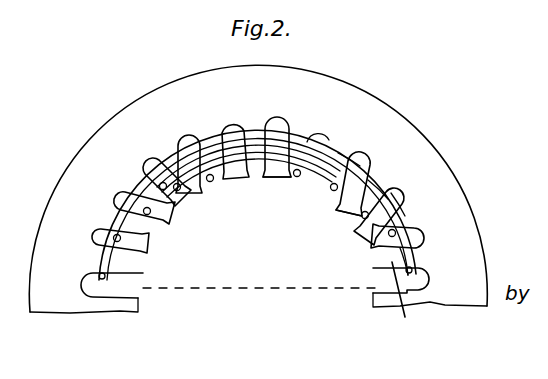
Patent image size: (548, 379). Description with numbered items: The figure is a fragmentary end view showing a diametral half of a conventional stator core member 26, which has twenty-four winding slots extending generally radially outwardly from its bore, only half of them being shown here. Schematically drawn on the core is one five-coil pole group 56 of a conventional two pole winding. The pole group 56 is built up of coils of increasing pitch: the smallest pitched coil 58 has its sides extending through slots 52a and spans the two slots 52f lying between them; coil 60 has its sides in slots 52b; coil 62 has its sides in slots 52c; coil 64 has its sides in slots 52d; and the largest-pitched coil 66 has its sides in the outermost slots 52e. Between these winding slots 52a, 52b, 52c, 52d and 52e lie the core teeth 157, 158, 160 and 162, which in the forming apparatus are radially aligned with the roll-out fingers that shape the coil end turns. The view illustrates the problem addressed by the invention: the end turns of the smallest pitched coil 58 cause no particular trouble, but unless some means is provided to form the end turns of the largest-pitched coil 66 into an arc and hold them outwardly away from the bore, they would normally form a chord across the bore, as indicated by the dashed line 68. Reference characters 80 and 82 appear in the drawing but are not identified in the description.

The stator core member 26 is at (454, 163).
The pole group 56 is at (321, 122).
The smallest pitched coil 58 is at (272, 179).
The coil 60 is at (181, 138).
The coil 62 is at (335, 206).
The coil 64 is at (115, 197).
The largest-pitched coil 66 is at (417, 257).
The dashed line 68 is at (247, 289).
The yoke laminations 80 is at (207, 130).
The center pole 82 is at (303, 132).
The core tooth 157 is at (344, 145).
The core tooth 158 is at (381, 177).
The core tooth 160 is at (405, 213).
The core tooth 162 is at (411, 301).
The winding slots 52a is at (200, 180).
The winding slots 52b is at (177, 200).
The winding slots 52c is at (153, 223).
The winding slots 52d is at (97, 242).
The winding slots 52e is at (120, 287).
The winding slots 52f is at (232, 126).